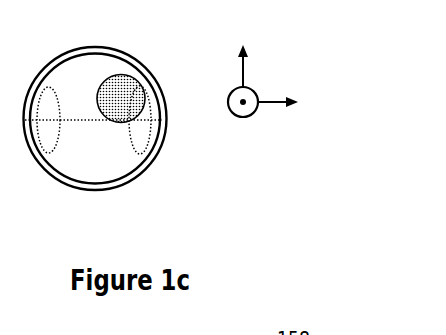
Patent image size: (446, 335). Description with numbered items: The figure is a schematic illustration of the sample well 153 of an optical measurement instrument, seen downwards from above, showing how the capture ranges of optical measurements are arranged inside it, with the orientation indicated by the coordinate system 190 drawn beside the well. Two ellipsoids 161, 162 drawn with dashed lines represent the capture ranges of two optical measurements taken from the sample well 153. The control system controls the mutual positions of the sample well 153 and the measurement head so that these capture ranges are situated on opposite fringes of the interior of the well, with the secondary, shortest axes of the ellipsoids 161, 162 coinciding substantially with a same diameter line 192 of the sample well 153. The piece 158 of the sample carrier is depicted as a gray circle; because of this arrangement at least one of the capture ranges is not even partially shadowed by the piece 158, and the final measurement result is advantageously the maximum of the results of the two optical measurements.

The sample well 153 is at (79, 83).
The piece of the sample carrier 158 is at (117, 90).
The ellipsoid 161 is at (54, 130).
The ellipsoid 162 is at (131, 124).
The diameter line 192 is at (90, 122).
The coordinate system 190 is at (260, 86).